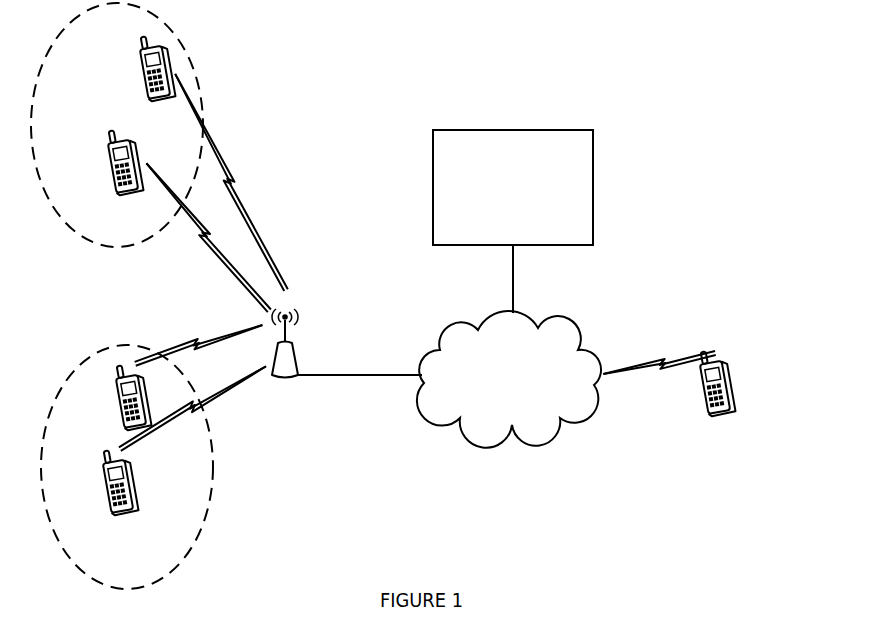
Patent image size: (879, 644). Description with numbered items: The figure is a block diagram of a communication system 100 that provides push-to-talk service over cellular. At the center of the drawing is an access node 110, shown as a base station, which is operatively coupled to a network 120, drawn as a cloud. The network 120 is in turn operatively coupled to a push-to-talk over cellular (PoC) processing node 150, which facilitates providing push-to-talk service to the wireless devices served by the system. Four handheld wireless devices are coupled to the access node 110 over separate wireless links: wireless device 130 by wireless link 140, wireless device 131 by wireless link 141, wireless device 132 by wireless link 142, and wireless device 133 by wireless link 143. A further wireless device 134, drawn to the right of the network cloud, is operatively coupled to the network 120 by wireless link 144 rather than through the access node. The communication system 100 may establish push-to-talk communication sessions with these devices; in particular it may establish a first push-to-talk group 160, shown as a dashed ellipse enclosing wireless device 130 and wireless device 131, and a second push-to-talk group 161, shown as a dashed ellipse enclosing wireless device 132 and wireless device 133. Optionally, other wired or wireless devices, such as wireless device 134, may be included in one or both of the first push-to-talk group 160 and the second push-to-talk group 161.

The communication system 100 is at (745, 49).
The access node 110 is at (288, 378).
The network 120 is at (523, 390).
The wireless device 130 is at (133, 505).
The wireless device 131 is at (127, 427).
The wireless device 132 is at (145, 87).
The wireless device 133 is at (120, 185).
The wireless device 134 is at (716, 408).
The wireless link 140 is at (213, 406).
The wireless link 141 is at (183, 350).
The wireless link 142 is at (227, 157).
The wireless link 143 is at (212, 253).
The wireless link 144 is at (656, 357).
The push-to-talk over cellular (PoC) processing node 150 is at (527, 232).
The first push-to-talk group 160 is at (195, 540).
The second push-to-talk group 161 is at (80, 240).